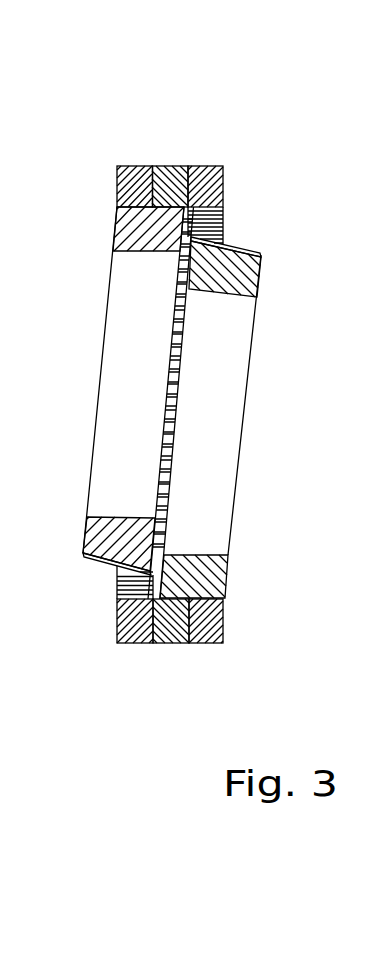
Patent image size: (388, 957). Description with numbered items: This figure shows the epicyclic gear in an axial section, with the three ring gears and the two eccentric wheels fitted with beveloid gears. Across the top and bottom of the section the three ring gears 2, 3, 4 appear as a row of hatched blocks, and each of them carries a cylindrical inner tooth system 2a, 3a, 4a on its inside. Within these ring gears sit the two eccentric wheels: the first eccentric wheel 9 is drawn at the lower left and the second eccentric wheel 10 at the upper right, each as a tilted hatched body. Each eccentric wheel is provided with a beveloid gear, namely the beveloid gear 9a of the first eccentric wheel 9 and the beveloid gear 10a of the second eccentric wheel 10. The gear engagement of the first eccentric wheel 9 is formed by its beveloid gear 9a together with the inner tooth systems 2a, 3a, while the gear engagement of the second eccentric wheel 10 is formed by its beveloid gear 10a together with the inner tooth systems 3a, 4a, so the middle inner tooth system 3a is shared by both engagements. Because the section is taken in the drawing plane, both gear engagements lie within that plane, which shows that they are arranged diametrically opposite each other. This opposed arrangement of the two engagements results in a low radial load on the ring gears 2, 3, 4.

The ring gear 2 is at (133, 185).
The cylindrical inner tooth system of ring gear 2 2a is at (127, 603).
The ring gear 3 is at (171, 173).
The cylindrical inner tooth system of ring gear 3 3a is at (157, 527).
The ring gear 4 is at (202, 183).
The cylindrical inner tooth system of ring gear 4 4a is at (223, 213).
The first eccentric wheel 9 is at (85, 542).
The beveloid gear of the first eccentric wheel 9a is at (120, 552).
The second eccentric wheel 10 is at (250, 264).
The beveloid gear of the second eccentric wheel 10a is at (232, 243).